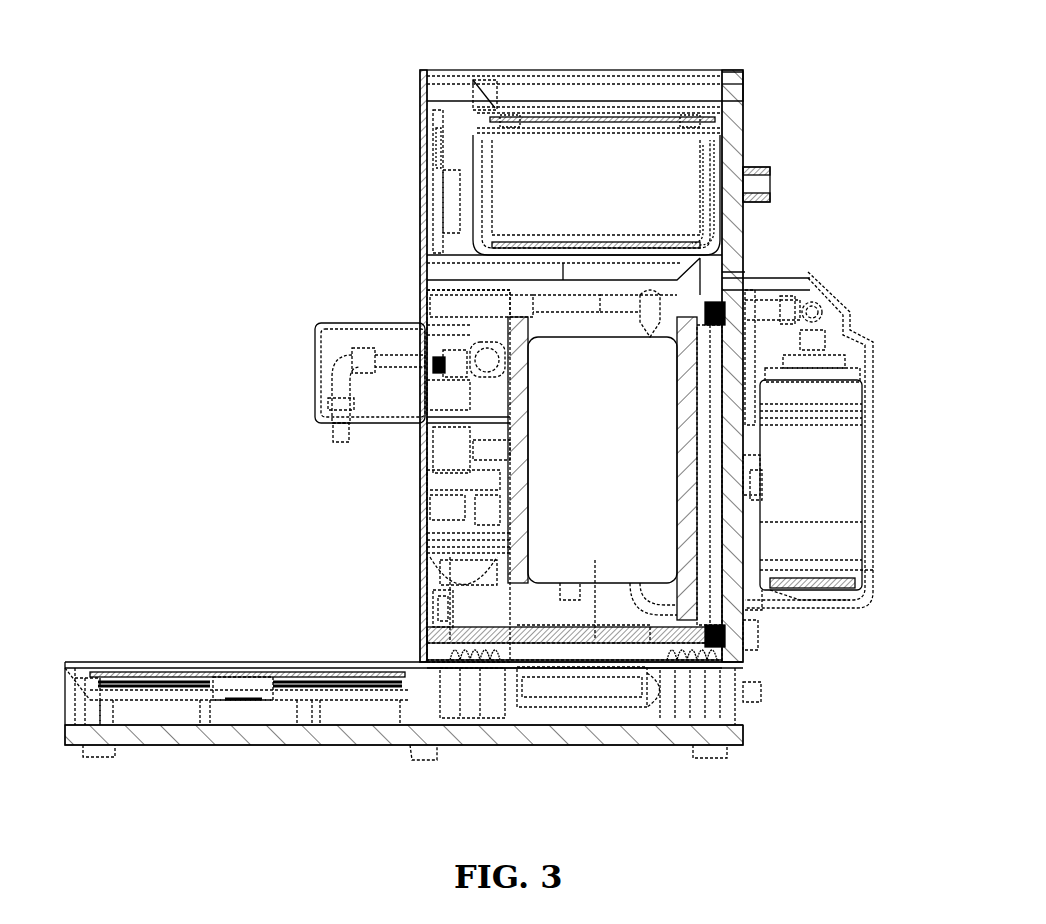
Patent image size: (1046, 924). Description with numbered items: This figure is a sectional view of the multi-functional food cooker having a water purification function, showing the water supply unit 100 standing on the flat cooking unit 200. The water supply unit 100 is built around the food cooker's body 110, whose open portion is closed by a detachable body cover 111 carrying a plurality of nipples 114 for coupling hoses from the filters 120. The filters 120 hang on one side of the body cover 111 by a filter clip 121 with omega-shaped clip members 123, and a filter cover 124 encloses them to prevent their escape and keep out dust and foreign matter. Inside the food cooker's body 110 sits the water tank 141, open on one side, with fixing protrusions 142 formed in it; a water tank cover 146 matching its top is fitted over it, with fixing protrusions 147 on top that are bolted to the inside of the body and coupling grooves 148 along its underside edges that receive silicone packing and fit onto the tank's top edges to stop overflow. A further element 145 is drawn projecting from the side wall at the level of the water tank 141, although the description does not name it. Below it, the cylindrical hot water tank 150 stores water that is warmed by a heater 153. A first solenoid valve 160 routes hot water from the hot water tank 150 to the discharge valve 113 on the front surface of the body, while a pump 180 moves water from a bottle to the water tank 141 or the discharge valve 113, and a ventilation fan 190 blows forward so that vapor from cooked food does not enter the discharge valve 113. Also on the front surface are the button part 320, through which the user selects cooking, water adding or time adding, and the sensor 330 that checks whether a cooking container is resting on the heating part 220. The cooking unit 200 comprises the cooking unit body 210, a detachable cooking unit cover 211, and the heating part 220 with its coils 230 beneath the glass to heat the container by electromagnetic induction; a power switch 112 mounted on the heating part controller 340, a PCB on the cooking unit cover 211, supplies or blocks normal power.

The water supply unit 100 is at (365, 95).
The food cooker's body 110 is at (425, 228).
The body cover 111 is at (810, 565).
The power switch 112 is at (760, 702).
The discharge valve 113 is at (315, 395).
The nipples 114 is at (740, 270).
The filters 120 is at (845, 405).
The filter clip 121 is at (762, 476).
The clip members 123 is at (805, 408).
The filter cover 124 is at (835, 298).
The water tank 141 is at (730, 160).
The fixing protrusions 142 is at (725, 205).
The tank handle 145 is at (775, 182).
The water tank cover 146 is at (665, 100).
The fixing protrusions 147 is at (470, 108).
The coupling grooves 148 is at (735, 95).
The hot water tank 150 is at (673, 755).
The heater 153 is at (530, 633).
The first solenoid valve 160 is at (480, 300).
The pump 180 is at (425, 570).
The ventilation fan 190 is at (425, 470).
The cooking unit 200 is at (120, 615).
The cooking unit body 210 is at (72, 665).
The cooking unit cover 211 is at (395, 745).
The heating part 220 is at (215, 705).
The coils 230 is at (185, 665).
The button part 320 is at (440, 158).
The sensor 330 is at (425, 610).
The heating part controller 340 is at (552, 713).